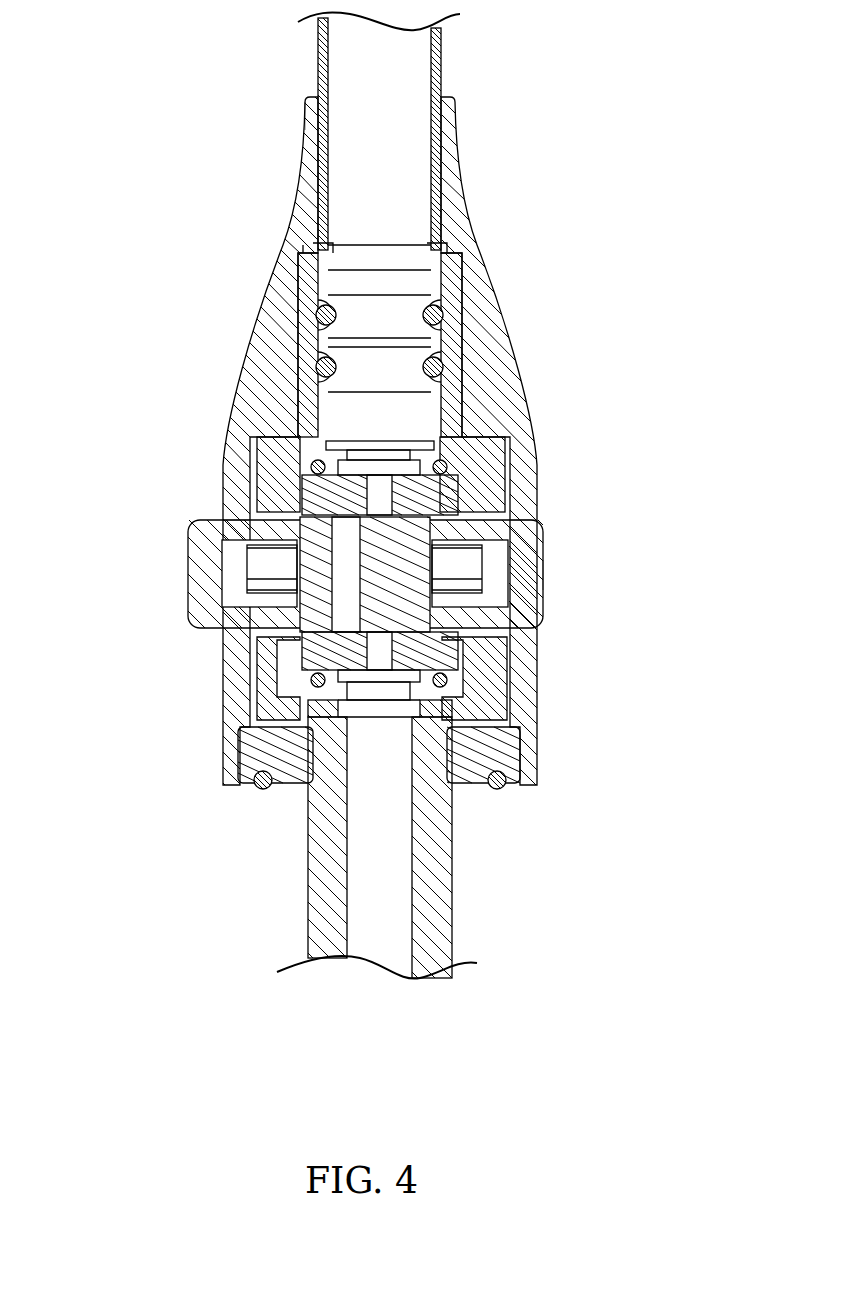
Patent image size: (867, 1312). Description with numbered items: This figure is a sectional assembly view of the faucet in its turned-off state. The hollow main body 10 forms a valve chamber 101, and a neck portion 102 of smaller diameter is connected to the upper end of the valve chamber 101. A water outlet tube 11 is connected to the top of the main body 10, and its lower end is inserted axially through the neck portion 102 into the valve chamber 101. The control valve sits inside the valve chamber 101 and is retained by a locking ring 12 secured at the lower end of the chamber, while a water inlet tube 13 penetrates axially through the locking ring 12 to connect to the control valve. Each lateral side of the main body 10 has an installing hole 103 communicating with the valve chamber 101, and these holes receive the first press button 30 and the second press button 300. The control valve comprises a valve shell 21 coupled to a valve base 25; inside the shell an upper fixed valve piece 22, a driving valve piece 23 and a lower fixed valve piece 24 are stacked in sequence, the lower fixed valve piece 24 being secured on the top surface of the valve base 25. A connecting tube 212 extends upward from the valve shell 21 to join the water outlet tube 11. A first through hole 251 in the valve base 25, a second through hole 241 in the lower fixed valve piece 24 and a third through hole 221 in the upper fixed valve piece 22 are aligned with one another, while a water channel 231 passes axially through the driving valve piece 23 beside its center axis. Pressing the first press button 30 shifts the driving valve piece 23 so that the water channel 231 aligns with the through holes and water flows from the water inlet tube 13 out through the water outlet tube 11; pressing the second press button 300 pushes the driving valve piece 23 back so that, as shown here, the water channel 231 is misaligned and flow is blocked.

The main body 10 is at (488, 252).
The valve chamber 101 is at (255, 492).
The neck portion 102 is at (444, 96).
The installing hole 103 is at (521, 510).
The water outlet tube 11 is at (322, 56).
The locking ring 12 is at (275, 787).
The water inlet tube 13 is at (440, 897).
The valve shell 21 is at (482, 470).
The upper fixed valve piece 22 is at (290, 460).
The third through hole 221 is at (360, 470).
The connecting tube 212 is at (303, 292).
The driving valve piece 23 is at (413, 585).
The water channel 231 is at (297, 577).
The lower fixed valve piece 24 is at (462, 647).
The second through hole 241 is at (272, 684).
The valve base 25 is at (242, 723).
The first through hole 251 is at (458, 708).
The first press button 30 is at (188, 557).
The second press button 300 is at (543, 565).